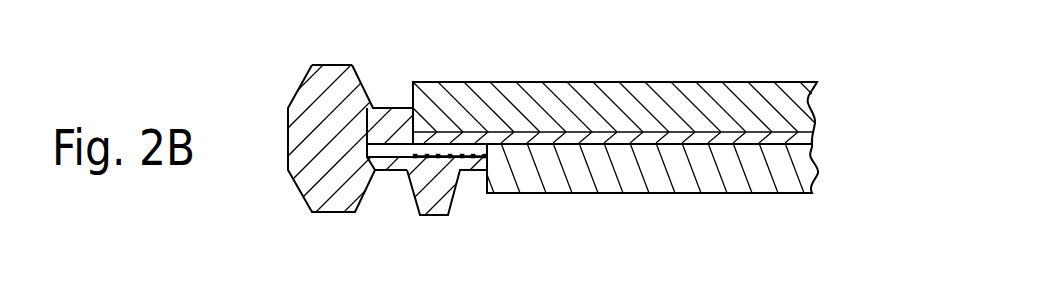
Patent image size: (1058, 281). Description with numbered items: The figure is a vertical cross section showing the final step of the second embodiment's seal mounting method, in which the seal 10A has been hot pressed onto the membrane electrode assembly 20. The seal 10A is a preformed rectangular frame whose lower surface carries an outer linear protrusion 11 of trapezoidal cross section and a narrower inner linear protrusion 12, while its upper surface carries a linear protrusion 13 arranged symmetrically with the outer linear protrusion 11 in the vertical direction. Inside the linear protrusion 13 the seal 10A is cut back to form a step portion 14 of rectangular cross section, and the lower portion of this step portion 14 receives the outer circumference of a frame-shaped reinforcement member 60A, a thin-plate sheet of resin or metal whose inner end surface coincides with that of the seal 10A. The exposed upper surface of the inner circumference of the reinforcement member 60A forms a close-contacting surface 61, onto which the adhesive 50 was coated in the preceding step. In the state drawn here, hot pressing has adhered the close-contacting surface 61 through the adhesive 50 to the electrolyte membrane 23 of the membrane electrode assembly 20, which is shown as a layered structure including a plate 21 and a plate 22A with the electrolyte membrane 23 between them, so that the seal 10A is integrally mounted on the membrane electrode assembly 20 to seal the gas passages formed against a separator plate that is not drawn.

The seal 10A is at (290, 86).
The outer linear protrusion 11 is at (300, 192).
The inner linear protrusion 12 is at (433, 217).
The linear protrusion 13 is at (327, 65).
The step portion 14 is at (392, 108).
The reinforcement member 60A is at (375, 172).
The adhesive 50 is at (478, 146).
The close-contacting surface 61 is at (444, 155).
The membrane electrode assembly 20 is at (606, 75).
The first conductive plate 21 is at (657, 82).
The electrolyte membrane 23 is at (747, 143).
The second conductive plate 22A is at (795, 176).